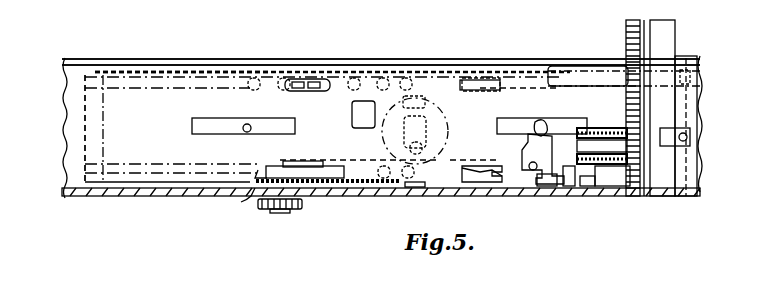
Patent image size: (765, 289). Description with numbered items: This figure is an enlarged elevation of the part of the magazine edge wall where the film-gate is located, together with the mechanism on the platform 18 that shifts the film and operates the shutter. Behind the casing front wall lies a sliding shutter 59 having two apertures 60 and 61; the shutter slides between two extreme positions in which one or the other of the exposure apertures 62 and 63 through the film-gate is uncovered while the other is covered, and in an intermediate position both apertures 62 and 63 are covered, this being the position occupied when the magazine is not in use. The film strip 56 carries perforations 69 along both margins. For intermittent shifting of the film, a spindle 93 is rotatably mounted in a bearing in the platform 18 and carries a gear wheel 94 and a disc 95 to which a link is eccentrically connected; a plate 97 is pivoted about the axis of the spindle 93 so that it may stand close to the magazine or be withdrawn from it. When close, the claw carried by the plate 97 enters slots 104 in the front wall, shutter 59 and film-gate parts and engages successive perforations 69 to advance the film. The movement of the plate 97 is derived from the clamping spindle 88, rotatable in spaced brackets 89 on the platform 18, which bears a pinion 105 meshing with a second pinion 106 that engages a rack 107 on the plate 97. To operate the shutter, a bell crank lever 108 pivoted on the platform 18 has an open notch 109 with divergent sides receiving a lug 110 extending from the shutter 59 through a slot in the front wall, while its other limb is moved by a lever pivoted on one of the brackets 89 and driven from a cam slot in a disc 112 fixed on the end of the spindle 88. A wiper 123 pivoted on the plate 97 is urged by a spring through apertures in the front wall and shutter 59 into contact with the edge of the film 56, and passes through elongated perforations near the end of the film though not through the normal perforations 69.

The platform 18 is at (172, 190).
The film strip 56 is at (90, 131).
The sliding shutter 59 is at (265, 64).
The aperture 60 is at (419, 64).
The aperture 61 is at (430, 143).
The exposure aperture 62 is at (352, 117).
The exposure aperture 63 is at (440, 130).
The perforations 69 is at (188, 70).
The spindle 88 is at (595, 66).
The brackets 89 is at (677, 195).
The spindle 93 is at (284, 210).
The gear wheel 94 is at (252, 198).
The disc 95 is at (257, 168).
The plate 97 is at (414, 190).
The slots 104 is at (481, 91).
The pinion 105 is at (625, 28).
The second pinion 106 is at (614, 126).
The rack 107 is at (600, 190).
The bell crank lever 108 is at (548, 178).
The notch 109 is at (525, 148).
The lug 110 is at (249, 126).
The disc 112 is at (676, 36).
The wiper 123 is at (497, 190).